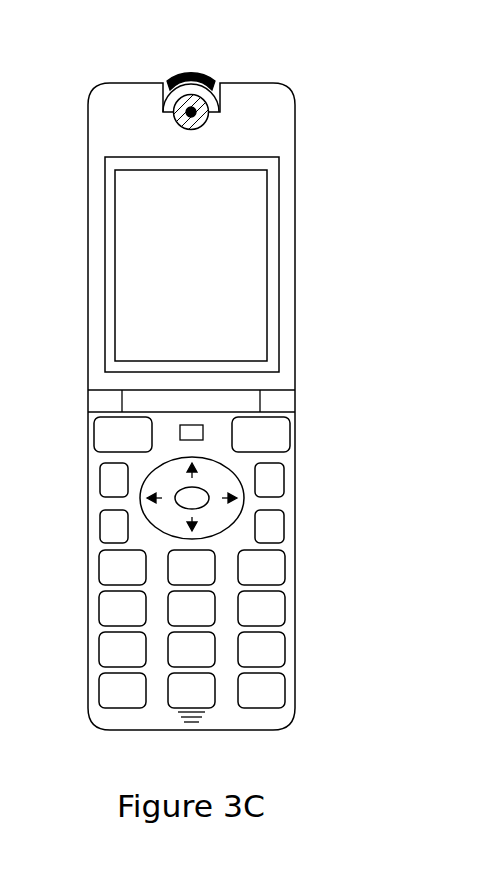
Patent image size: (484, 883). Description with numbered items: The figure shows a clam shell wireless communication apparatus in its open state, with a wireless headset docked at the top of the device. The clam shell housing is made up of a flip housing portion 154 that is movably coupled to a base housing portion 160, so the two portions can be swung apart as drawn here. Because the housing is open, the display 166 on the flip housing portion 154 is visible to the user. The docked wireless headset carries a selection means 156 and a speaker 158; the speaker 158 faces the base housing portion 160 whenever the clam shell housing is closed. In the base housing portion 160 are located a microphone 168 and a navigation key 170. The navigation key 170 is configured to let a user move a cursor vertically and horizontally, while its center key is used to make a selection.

The flip housing portion 154 is at (287, 238).
The selection means 156 is at (198, 75).
The speaker 158 is at (180, 98).
The display 166 is at (128, 228).
The base housing portion 160 is at (288, 550).
The navigation key 170 is at (213, 483).
The microphone 168 is at (195, 723).